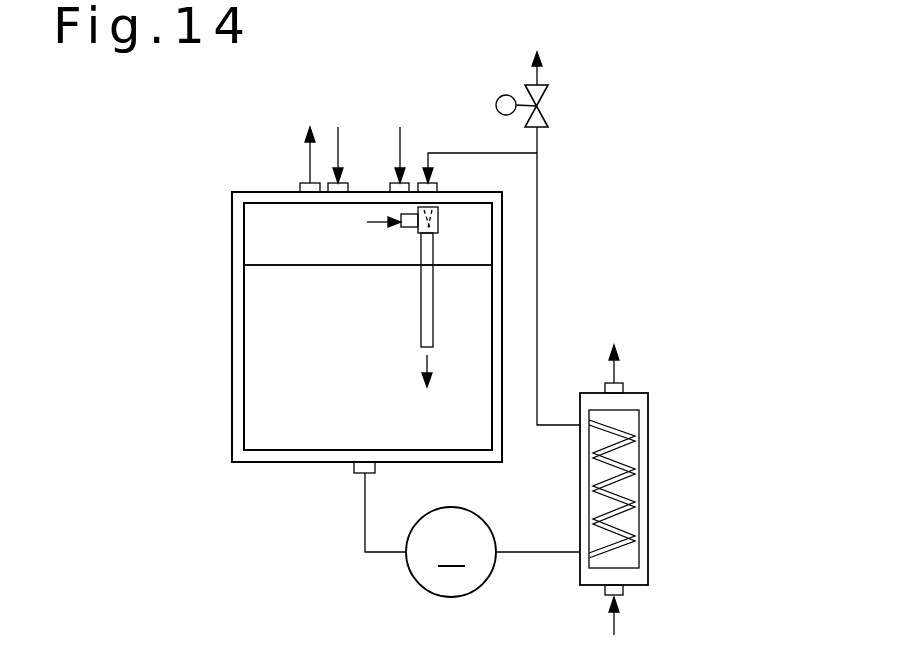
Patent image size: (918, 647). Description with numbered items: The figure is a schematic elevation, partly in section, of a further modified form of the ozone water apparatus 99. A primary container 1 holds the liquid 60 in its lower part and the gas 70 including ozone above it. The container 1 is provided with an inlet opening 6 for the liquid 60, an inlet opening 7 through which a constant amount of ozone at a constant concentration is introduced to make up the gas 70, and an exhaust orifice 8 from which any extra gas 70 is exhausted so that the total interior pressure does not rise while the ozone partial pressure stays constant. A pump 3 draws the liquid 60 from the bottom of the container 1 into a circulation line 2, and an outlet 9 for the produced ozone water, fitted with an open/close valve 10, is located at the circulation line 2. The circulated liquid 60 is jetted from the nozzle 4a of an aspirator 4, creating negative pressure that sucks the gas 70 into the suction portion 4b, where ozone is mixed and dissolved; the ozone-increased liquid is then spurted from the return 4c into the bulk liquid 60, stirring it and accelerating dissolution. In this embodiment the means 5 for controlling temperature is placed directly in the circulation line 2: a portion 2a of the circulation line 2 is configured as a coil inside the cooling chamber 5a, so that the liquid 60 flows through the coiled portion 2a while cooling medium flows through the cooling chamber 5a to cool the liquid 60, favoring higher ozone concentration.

The primary container 1 is at (238, 316).
The apparatus 99 is at (232, 191).
The gas 70 is at (248, 238).
The liquid 60 is at (248, 418).
The exhaust orifice 8 is at (297, 181).
The inlet opening for the gas 7 is at (351, 181).
The inlet opening for the liquid 6 is at (412, 181).
The nozzle 4a is at (442, 208).
The aspirator 4 is at (439, 228).
The suction portion 4b is at (404, 229).
The return 4c is at (425, 330).
The outlet 9 is at (538, 72).
The open/close valve 10 is at (541, 108).
The means for controlling temperature 5 is at (640, 578).
The cooling chamber 5a is at (640, 450).
The coiled portion of the circulation line 2a is at (637, 512).
The pump 3 is at (493, 552).
The circulation line 2 is at (363, 540).